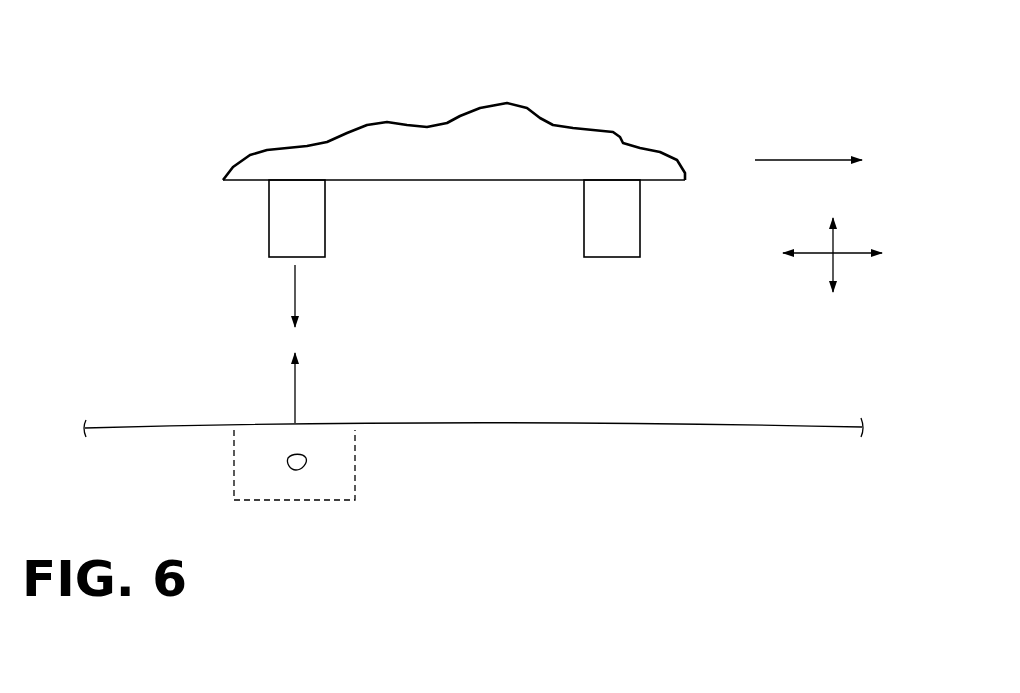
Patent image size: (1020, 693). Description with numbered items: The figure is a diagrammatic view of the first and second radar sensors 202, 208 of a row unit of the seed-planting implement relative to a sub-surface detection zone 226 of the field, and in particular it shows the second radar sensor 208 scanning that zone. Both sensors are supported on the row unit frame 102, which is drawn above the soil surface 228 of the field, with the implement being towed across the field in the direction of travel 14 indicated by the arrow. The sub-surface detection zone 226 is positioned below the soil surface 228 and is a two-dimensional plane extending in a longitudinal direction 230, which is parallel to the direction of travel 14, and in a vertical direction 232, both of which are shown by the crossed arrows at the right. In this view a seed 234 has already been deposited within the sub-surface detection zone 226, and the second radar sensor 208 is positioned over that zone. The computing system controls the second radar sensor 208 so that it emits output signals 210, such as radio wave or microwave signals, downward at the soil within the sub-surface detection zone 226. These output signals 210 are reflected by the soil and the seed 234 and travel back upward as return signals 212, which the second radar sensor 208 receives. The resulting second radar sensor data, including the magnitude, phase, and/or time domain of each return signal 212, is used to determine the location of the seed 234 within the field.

The row unit frame 102 is at (330, 148).
The second radar sensor 208 is at (268, 213).
The first radar sensor 202 is at (583, 213).
The output signals 210 is at (295, 290).
The return signals 212 is at (295, 403).
The direction of travel 14 is at (810, 160).
The vertical direction 232 is at (835, 242).
The longitudinal direction 230 is at (852, 258).
The soil surface 228 is at (177, 423).
The sub-surface detection zone 226 is at (357, 460).
The seed 234 is at (287, 462).